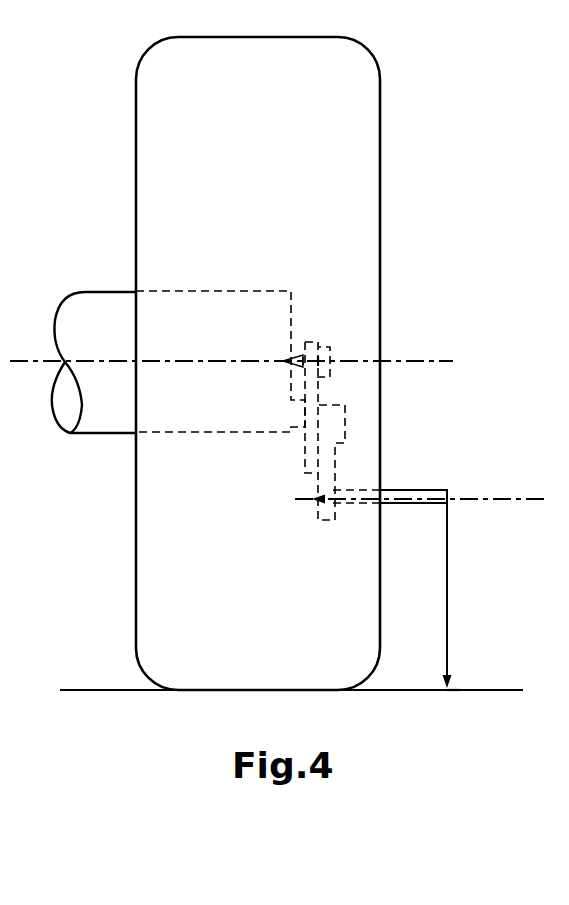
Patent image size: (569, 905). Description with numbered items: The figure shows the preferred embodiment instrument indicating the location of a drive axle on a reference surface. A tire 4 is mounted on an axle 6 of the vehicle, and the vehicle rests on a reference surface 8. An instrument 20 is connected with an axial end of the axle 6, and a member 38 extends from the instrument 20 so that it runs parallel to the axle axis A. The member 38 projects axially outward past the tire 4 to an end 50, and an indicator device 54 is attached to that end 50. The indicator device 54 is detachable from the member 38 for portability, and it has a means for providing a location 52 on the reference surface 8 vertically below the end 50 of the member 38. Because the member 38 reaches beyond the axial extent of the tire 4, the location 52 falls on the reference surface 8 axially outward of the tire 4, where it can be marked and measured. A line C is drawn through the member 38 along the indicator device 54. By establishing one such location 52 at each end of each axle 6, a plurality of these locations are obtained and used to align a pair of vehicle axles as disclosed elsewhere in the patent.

The tire 4 is at (392, 148).
The axle 6 is at (221, 282).
The reference surface 8 is at (105, 680).
The instrument 20 is at (360, 422).
The member 38 is at (412, 490).
The end of member 50 is at (460, 490).
The location 52 is at (460, 678).
The indicator device 54 is at (449, 580).
The axle axis A is at (425, 360).
The reference line C is at (505, 499).